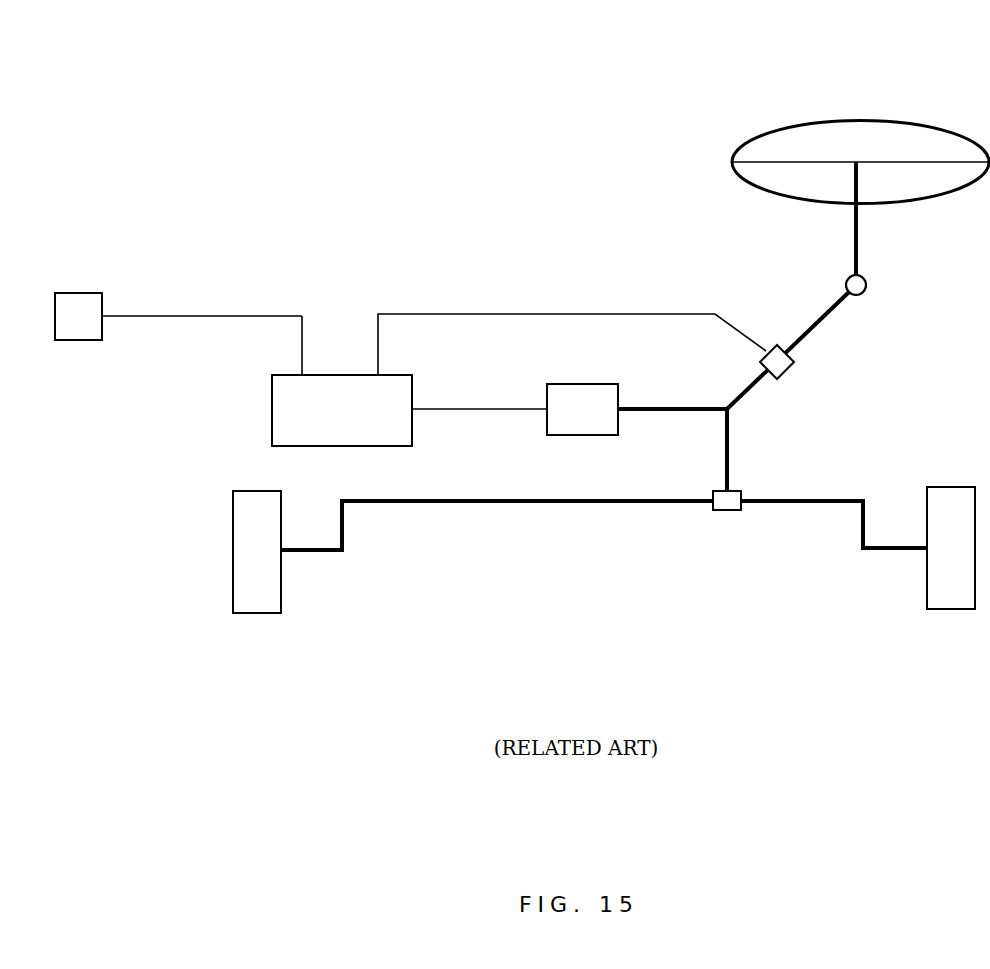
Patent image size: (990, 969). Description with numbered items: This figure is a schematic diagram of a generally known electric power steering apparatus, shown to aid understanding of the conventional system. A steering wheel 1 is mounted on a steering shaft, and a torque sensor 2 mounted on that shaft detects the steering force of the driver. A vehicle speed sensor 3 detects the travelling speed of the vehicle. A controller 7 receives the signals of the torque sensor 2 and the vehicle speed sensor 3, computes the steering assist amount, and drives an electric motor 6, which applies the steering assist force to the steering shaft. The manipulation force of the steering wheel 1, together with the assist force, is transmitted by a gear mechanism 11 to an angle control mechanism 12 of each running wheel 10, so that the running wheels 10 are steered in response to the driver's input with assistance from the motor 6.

The steering wheel 1 is at (878, 122).
The torque sensor 2 is at (773, 345).
The vehicle speed sensor 3 is at (78, 293).
The electric motor 6 is at (590, 384).
The controller 7 is at (272, 407).
The running wheel 10 is at (963, 418).
The gear mechanism 11 is at (727, 511).
The angle control mechanism 12 is at (342, 533).